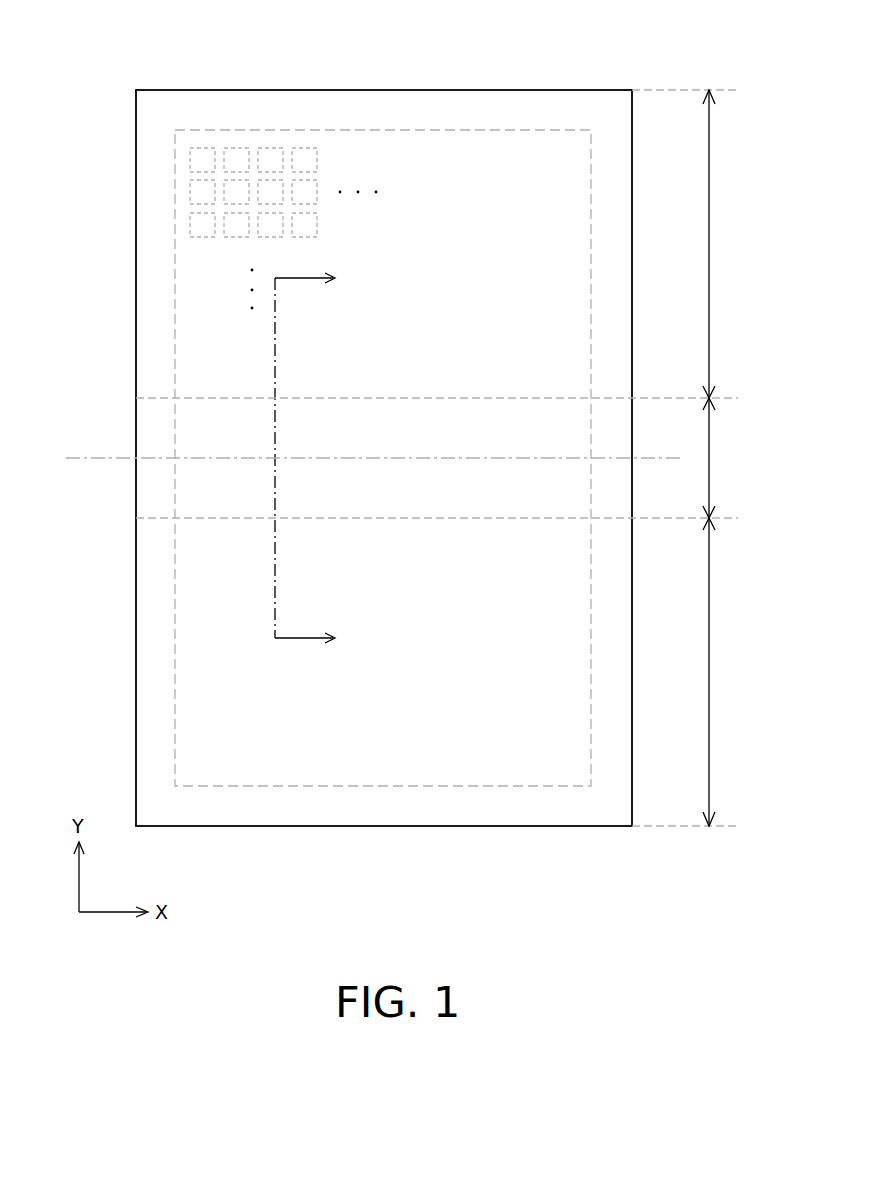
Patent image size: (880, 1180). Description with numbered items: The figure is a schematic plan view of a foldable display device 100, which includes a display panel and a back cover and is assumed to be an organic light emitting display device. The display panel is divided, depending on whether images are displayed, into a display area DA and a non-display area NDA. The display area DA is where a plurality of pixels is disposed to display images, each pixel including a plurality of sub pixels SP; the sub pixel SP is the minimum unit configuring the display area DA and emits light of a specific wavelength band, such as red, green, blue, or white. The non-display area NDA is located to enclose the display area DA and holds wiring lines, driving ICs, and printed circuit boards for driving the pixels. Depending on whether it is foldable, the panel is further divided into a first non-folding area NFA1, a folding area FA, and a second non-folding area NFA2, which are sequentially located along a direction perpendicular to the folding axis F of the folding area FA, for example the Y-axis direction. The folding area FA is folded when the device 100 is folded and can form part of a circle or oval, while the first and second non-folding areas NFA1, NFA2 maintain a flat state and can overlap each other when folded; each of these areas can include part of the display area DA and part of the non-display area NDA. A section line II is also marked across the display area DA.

The foldable display device 100 is at (618, 28).
The sub pixel SP is at (198, 148).
The display area DA is at (205, 310).
The non-display area NDA is at (155, 357).
The section line II-II' II is at (315, 458).
The folding axis F is at (365, 458).
The folding area FA is at (438, 458).
The first non-folding area NFA1 is at (699, 244).
The second non-folding area NFA2 is at (699, 672).